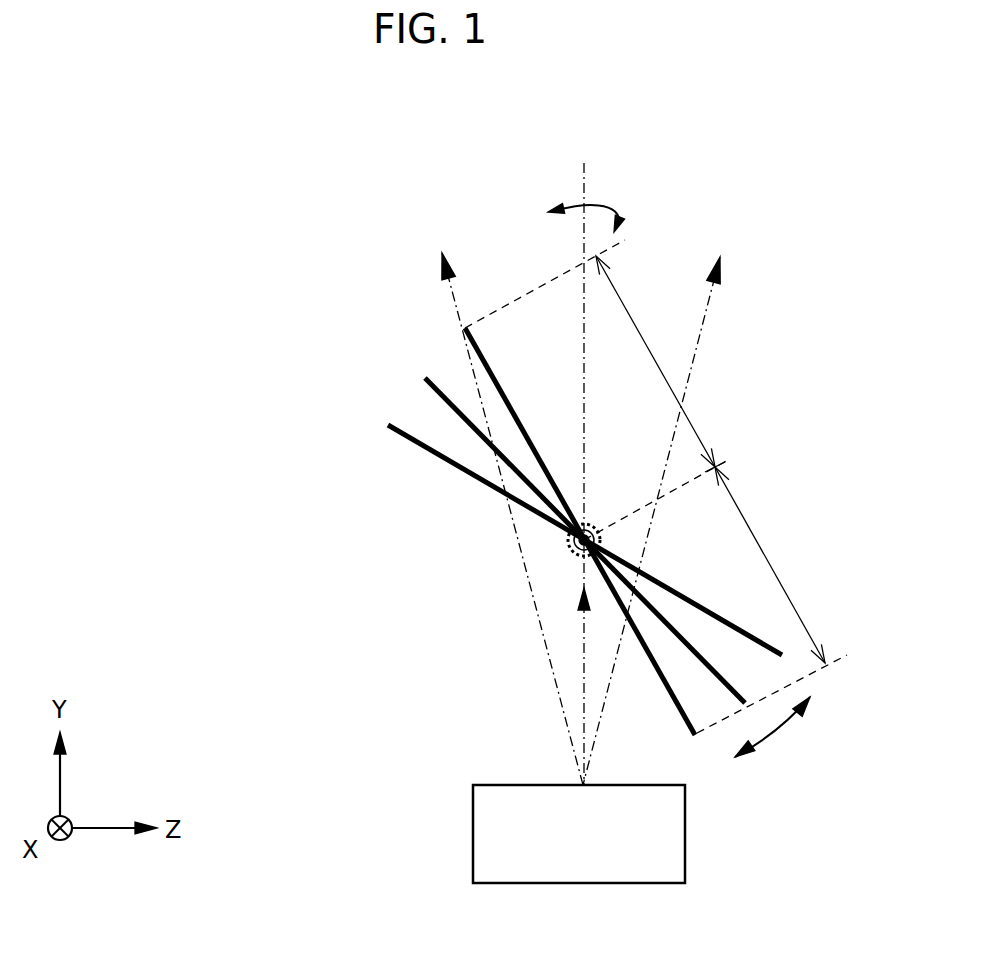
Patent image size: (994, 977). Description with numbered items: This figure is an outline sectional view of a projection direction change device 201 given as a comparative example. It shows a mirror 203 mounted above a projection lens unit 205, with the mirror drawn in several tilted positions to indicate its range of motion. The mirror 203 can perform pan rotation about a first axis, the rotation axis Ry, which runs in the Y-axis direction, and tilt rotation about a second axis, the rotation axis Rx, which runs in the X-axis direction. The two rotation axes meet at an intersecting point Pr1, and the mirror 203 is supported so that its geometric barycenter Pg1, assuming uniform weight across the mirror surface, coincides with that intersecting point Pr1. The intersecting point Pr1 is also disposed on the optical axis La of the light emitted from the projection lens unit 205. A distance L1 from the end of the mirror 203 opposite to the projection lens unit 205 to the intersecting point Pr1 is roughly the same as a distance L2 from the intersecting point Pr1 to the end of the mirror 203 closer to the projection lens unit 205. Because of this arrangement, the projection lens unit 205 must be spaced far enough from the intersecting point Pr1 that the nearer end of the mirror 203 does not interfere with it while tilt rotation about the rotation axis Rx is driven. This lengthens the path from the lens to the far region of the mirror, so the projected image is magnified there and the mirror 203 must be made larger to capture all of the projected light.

The projection direction change device 201 is at (608, 154).
The mirror 203 is at (460, 333).
The projection lens unit 205 is at (473, 832).
The rotation axis Ry (first axis) Ry is at (592, 173).
The distance L1 is at (655, 361).
The distance L2 is at (765, 562).
The intersecting point of the two rotation axes Pr1 is at (570, 538).
The rotation axis Rx (second axis) Rx is at (568, 541).
The geometric barycenter Pg1 is at (568, 546).
The optical axis La is at (569, 726).